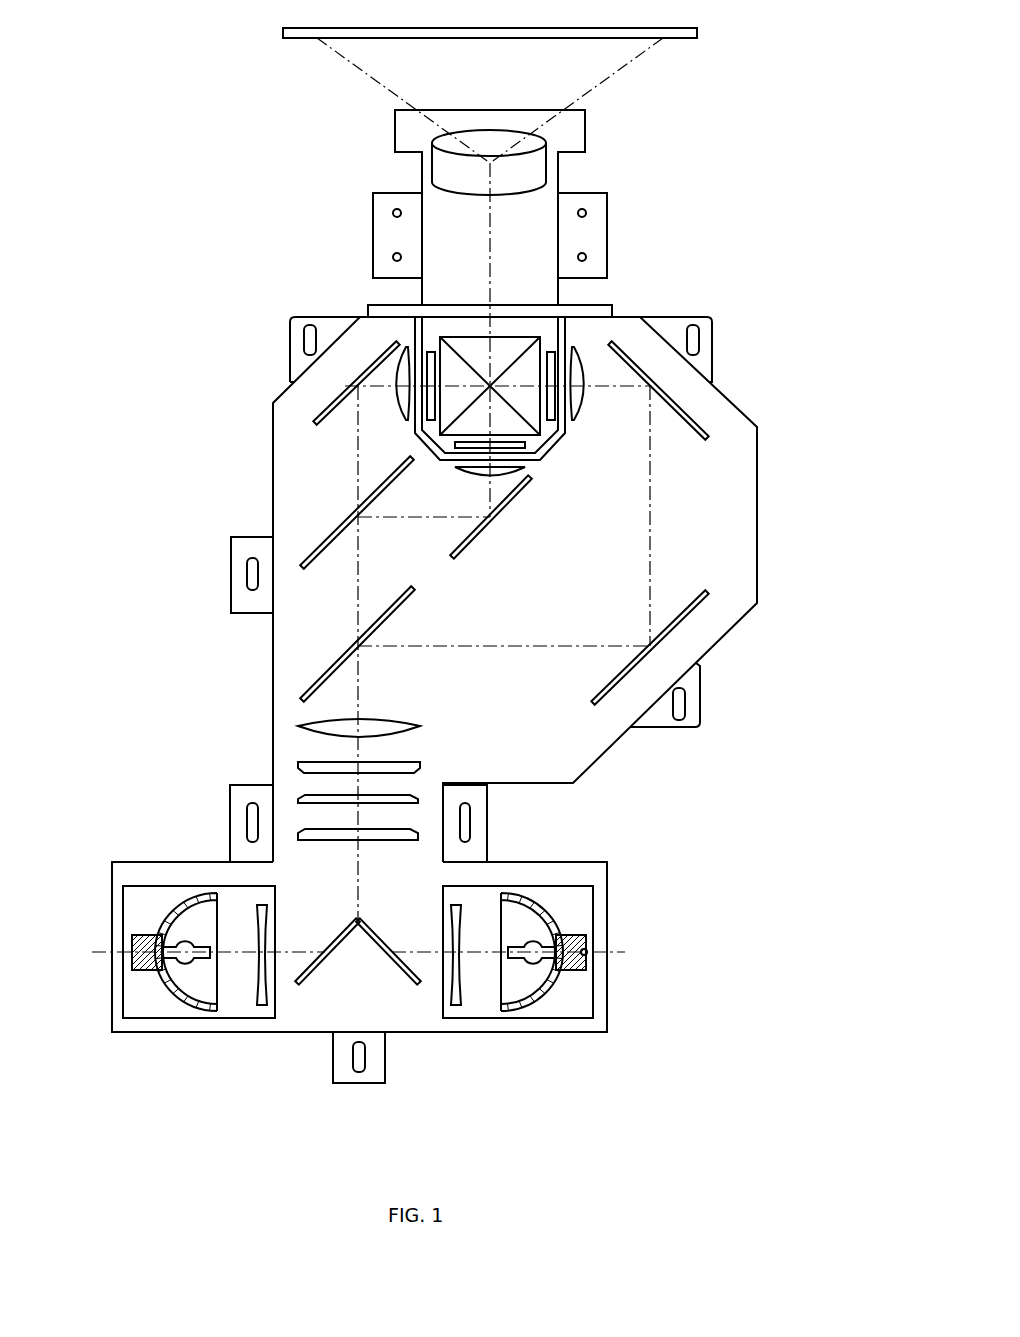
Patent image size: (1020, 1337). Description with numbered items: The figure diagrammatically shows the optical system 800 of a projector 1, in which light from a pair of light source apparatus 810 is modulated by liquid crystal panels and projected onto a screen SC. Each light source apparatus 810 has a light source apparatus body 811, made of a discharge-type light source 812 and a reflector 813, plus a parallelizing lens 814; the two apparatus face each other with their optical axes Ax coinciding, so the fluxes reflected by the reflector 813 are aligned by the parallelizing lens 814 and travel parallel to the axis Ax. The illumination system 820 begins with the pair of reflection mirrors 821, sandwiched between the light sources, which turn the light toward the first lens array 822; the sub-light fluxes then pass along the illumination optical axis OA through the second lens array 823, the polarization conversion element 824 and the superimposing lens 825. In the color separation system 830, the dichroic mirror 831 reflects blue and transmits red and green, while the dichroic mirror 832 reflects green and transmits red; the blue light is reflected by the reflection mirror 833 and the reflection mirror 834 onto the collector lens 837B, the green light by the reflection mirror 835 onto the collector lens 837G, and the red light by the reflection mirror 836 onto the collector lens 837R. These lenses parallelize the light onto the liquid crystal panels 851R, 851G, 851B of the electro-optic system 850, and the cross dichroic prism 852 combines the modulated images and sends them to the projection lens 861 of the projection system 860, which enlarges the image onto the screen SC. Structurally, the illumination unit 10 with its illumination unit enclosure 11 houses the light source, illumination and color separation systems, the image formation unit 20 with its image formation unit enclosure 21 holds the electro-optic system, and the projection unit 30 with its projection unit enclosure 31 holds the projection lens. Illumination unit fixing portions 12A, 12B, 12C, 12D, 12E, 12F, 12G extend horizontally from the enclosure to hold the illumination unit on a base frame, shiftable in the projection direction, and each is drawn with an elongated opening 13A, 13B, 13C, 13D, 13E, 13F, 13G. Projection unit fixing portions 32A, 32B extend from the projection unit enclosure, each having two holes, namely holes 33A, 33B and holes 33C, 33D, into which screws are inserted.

The projector 1 is at (118, 298).
The screen SC is at (297, 39).
The illumination unit 10 is at (632, 756).
The illumination unit enclosure 11 is at (757, 530).
The illumination unit fixing portion 12A is at (290, 362).
The illumination unit fixing portion 12B is at (712, 362).
The illumination unit fixing portion 12C is at (231, 548).
The illumination unit fixing portion 12D is at (230, 797).
The illumination unit fixing portion 12E is at (385, 1065).
The illumination unit fixing portion 12F is at (487, 805).
The illumination unit fixing portion 12G is at (700, 680).
The attachment hole 13A is at (304, 336).
The attachment hole 13B is at (699, 334).
The attachment hole 13C is at (247, 575).
The attachment hole 13D is at (247, 822).
The attachment hole 13E is at (352, 1062).
The attachment hole 13F is at (470, 835).
The attachment hole 13G is at (685, 705).
The image formation unit 20 is at (556, 434).
The image formation unit enclosure 21 is at (567, 437).
The projection unit 30 is at (605, 112).
The projection unit enclosure 31 is at (562, 172).
The projection unit fixing portion 32A is at (387, 192).
The projection unit fixing portion 32B is at (591, 192).
The hole 33A is at (393, 213).
The hole 33B is at (393, 257).
The hole 33C is at (586, 257).
The hole 33D is at (586, 213).
The optical system 800 is at (245, 425).
The light source apparatus 810 is at (568, 908).
The light source apparatus body 811 is at (359, 1007).
The discharge-type light source 812 is at (518, 965).
The reflector 813 is at (548, 992).
The parallelizing lens 814 is at (456, 1006).
The illumination system 820 is at (303, 1014).
The reflection mirror 821 is at (375, 937).
The first lens array 822 is at (350, 840).
The second lens array 823 is at (350, 803).
The polarization conversion element 824 is at (420, 768).
The superimposing lens 825 is at (420, 735).
The color separation system 830 is at (298, 475).
The dichroic mirror 831 is at (323, 675).
The dichroic mirror 832 is at (326, 545).
The reflection mirror 833 is at (606, 690).
The reflection mirror 834 is at (685, 420).
The reflection mirror 835 is at (486, 527).
The reflection mirror 836 is at (328, 412).
The collector lens 837R is at (405, 348).
The collector lens 837G is at (527, 478).
The collector lens 837B is at (576, 347).
The electro-optic system 850 is at (438, 458).
The liquid crystal panel 851R is at (431, 350).
The liquid crystal panel 851G is at (541, 456).
The liquid crystal panel 851B is at (549, 350).
The cross dichroic prism 852 is at (440, 427).
The projection system 860 is at (380, 113).
The projection lens 861 is at (425, 174).
The illumination optical axis OA is at (360, 865).
The optical axis Ax is at (485, 948).